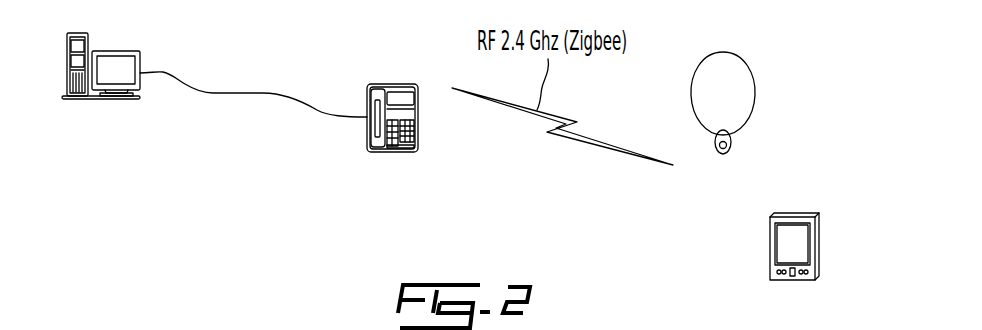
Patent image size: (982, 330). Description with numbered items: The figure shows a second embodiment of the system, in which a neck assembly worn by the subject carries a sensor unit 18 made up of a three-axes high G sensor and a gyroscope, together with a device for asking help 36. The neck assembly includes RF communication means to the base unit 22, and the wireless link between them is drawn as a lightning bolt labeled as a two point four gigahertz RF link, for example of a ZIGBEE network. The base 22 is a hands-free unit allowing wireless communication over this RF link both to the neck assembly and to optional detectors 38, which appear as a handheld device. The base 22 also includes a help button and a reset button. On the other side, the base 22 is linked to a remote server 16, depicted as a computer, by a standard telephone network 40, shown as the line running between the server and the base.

The remote server 16 is at (100, 102).
The standard telephone network 40 is at (218, 92).
The base unit 22 is at (418, 138).
The sensor unit 18 is at (755, 73).
The device for asking help 36 is at (732, 143).
The optional detectors 38 is at (815, 253).